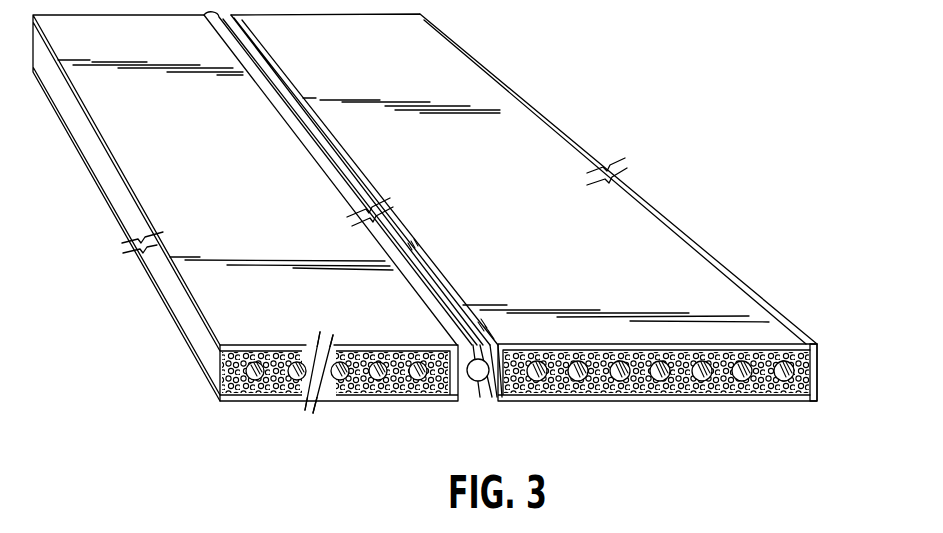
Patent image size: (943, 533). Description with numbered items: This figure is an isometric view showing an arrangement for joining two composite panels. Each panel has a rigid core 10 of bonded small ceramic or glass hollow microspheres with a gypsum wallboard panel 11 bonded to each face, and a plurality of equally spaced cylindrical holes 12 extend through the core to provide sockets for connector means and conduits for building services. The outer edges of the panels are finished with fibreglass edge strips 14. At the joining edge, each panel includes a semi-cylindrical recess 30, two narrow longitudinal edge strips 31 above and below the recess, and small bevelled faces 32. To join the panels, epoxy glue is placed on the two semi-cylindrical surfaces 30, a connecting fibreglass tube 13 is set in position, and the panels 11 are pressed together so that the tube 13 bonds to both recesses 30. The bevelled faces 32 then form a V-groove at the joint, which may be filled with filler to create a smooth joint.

The rigid core 10 is at (763, 388).
The gypsum wallboard panel 11 is at (232, 283).
The cylindrical holes 12 is at (649, 392).
The connecting or bonding fibreglass tube 13 is at (478, 381).
The fibreglass edge strips 14 is at (819, 373).
The semi-cylindrical recess 30 is at (515, 390).
The narrow longitudinal edge strips 31 is at (467, 305).
The small bevelled faces 32 is at (420, 247).